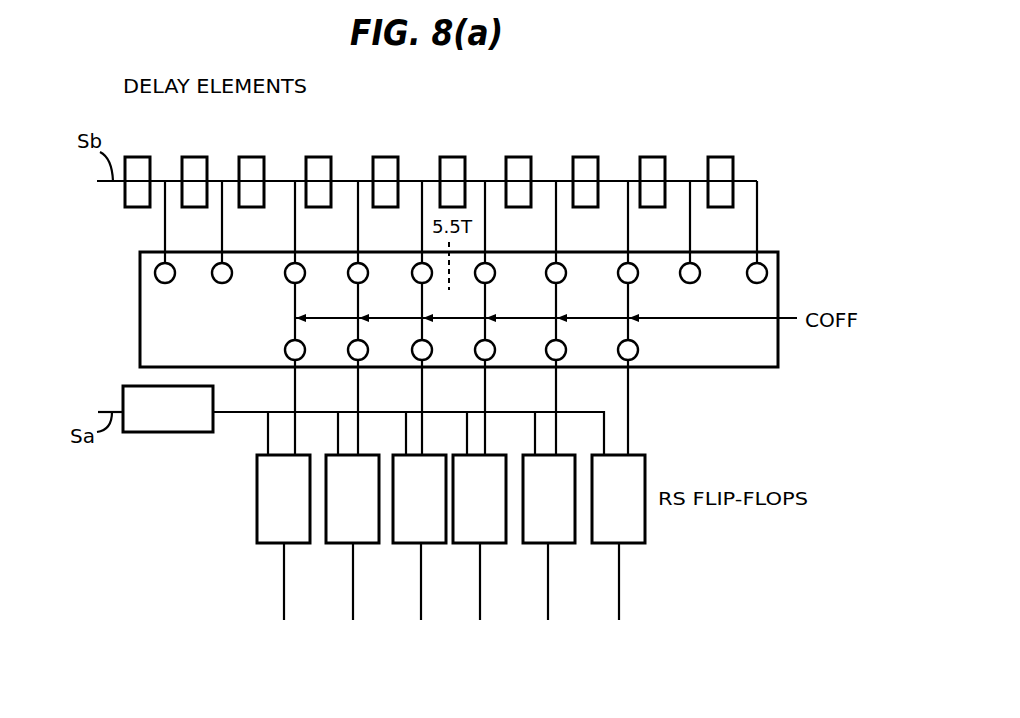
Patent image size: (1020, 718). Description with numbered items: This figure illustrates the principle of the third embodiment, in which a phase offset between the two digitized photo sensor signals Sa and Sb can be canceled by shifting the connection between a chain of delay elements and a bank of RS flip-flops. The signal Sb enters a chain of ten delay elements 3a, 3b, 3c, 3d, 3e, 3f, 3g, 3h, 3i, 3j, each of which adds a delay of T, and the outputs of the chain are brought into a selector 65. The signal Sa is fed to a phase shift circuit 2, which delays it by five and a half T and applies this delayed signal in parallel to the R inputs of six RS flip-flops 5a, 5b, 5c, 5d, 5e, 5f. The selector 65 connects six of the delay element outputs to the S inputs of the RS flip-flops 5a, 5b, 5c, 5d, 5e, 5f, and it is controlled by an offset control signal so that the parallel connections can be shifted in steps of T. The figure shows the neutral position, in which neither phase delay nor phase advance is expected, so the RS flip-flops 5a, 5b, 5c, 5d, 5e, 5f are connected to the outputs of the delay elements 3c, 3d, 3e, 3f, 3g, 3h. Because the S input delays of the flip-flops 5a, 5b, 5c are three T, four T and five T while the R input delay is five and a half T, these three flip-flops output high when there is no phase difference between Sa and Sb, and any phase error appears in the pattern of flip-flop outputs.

The delay element 3a is at (134, 157).
The delay element 3b is at (191, 157).
The delay element 3c is at (248, 157).
The delay element 3d is at (315, 157).
The delay element 3e is at (382, 157).
The delay element 3f is at (449, 157).
The delay element 3g is at (515, 157).
The delay element 3h is at (582, 157).
The delay element 3i is at (649, 157).
The delay element 3j is at (717, 157).
The selector 65 is at (140, 283).
The phase shift circuit 2 is at (131, 394).
The RS flip-flop 5a is at (268, 532).
The RS flip-flop 5b is at (338, 532).
The RS flip-flop 5c is at (405, 532).
The RS flip-flop 5d is at (467, 532).
The RS flip-flop 5e is at (535, 532).
The RS flip-flop 5f is at (605, 532).